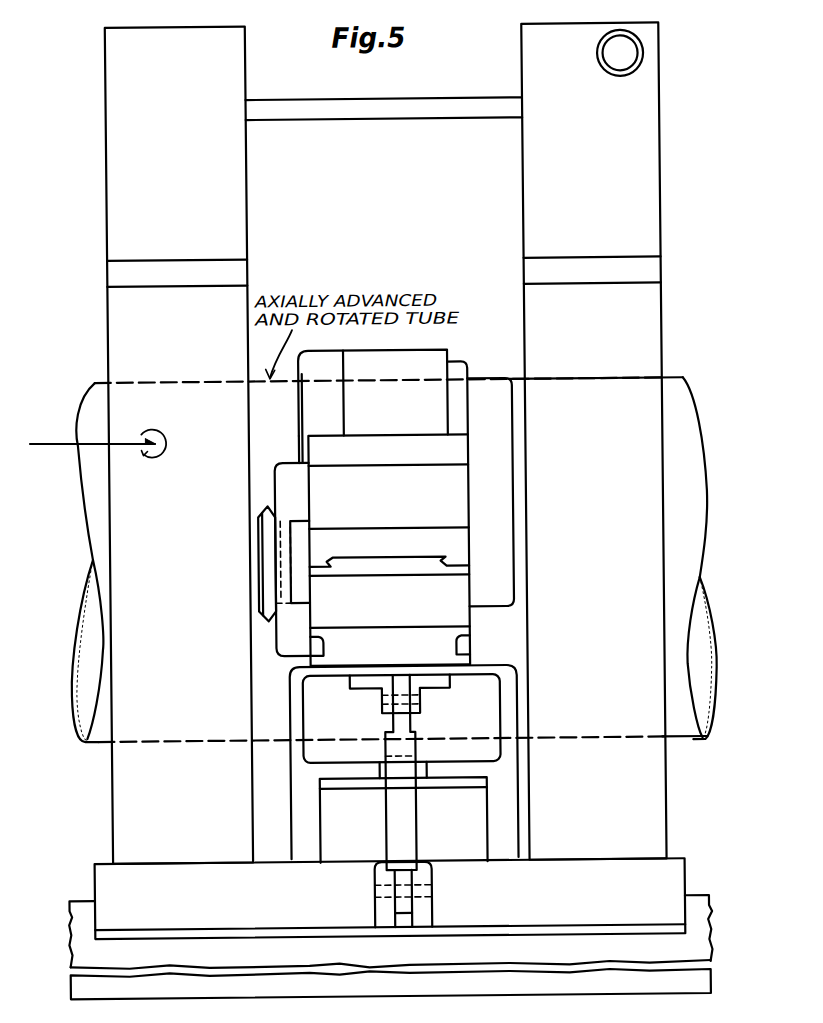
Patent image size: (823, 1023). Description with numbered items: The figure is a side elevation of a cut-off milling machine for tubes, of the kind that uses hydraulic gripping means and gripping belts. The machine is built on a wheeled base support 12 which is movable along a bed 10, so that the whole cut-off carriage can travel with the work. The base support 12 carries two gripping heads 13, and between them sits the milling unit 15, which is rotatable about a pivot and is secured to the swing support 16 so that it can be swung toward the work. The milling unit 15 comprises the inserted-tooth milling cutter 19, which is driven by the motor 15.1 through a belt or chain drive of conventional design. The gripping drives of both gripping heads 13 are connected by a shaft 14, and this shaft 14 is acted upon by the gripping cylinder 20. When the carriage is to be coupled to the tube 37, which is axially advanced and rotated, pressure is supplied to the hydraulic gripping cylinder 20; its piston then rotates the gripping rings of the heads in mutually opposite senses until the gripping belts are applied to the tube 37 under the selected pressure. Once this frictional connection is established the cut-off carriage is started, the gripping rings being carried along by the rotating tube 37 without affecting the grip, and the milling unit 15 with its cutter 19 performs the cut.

The bed 10 is at (76, 946).
The wheeled base support 12 is at (99, 881).
The gripping head 13 is at (161, 412).
The shaft 14 is at (357, 112).
The milling unit 15 is at (313, 490).
The motor 15.1 is at (398, 362).
The swing support 16 is at (306, 705).
The inserted-tooth milling cutter 19 is at (257, 535).
The gripping cylinder 20 is at (630, 61).
The tube 37 is at (664, 407).